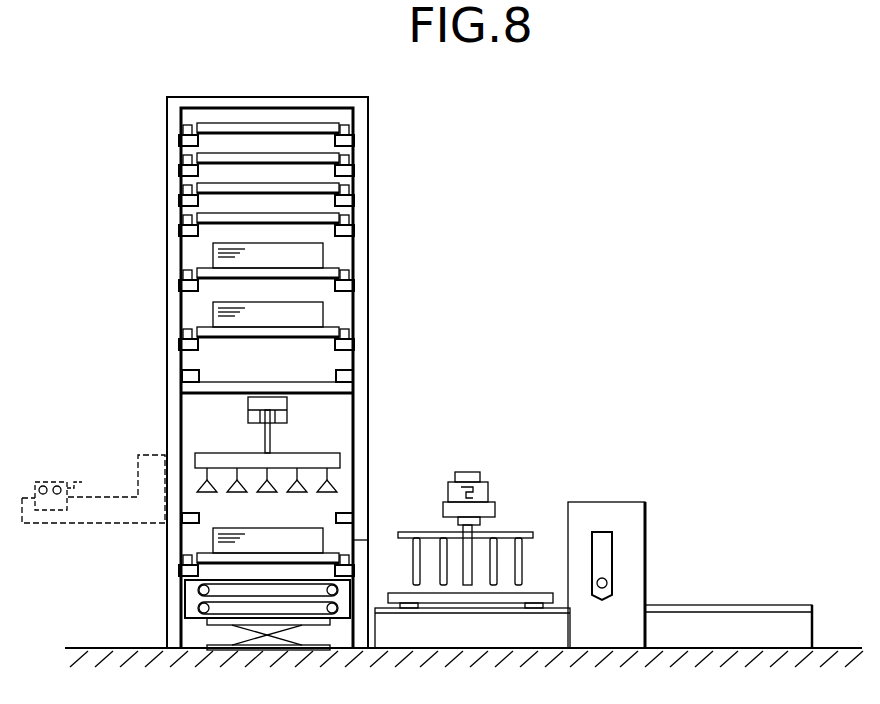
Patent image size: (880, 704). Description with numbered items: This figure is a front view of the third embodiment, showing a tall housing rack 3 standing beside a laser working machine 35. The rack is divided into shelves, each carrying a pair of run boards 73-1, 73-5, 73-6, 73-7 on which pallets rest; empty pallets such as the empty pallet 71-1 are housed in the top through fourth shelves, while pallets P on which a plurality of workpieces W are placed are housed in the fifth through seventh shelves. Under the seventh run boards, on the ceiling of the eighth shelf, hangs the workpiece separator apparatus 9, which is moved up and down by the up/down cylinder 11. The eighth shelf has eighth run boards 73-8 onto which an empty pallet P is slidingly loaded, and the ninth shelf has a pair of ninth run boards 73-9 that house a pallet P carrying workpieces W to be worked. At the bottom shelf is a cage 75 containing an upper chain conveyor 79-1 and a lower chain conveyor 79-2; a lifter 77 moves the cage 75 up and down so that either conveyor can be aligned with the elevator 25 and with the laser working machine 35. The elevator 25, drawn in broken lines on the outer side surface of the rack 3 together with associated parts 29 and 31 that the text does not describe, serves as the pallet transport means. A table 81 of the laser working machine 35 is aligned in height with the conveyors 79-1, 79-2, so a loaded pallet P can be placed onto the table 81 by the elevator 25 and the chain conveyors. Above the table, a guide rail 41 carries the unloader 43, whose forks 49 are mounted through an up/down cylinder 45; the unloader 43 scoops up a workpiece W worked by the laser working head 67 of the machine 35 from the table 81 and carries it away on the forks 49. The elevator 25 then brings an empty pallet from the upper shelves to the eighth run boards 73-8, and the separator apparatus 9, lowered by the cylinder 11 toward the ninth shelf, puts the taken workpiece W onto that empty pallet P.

The housing rack 3 is at (378, 104).
The empty pallet 71-1 is at (250, 123).
The shelf support bracket 73-1 is at (345, 141).
The workpiece W is at (307, 262).
The pallet P is at (322, 273).
The shelf support bracket 73-5 is at (350, 286).
The shelf support bracket 73-6 is at (352, 337).
The shelf support bracket 73-7 is at (343, 375).
The up/down cylinder 11 is at (288, 411).
The workpiece separator apparatus 9 is at (340, 478).
The eighth run boards 73-8 is at (337, 517).
The ninth run boards 73-9 is at (369, 557).
The upper chain conveyor 79-1 is at (222, 590).
The cage 75 is at (185, 598).
The lower chain conveyor 79-2 is at (217, 607).
The lifter 77 is at (228, 636).
The elevator 25 is at (65, 523).
The sensor 29 is at (52, 482).
The signal line 31 is at (82, 482).
The guide rail 41 is at (470, 472).
The unloader 43 is at (445, 509).
The up/down cylinder 45 is at (480, 523).
The forks 49 is at (523, 553).
The table 81 is at (395, 593).
The laser working machine 35 is at (620, 491).
The laser working head 67 is at (605, 554).